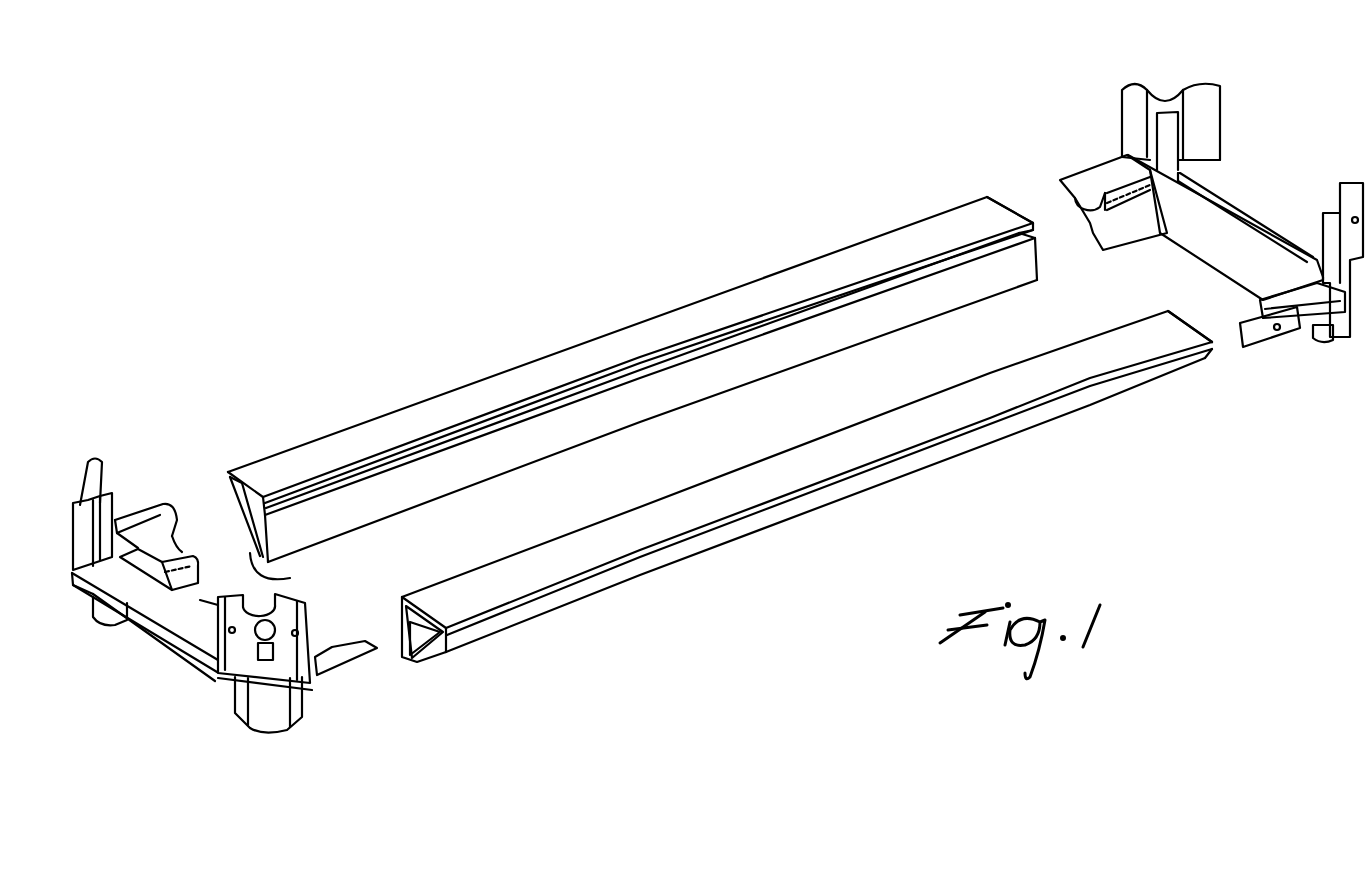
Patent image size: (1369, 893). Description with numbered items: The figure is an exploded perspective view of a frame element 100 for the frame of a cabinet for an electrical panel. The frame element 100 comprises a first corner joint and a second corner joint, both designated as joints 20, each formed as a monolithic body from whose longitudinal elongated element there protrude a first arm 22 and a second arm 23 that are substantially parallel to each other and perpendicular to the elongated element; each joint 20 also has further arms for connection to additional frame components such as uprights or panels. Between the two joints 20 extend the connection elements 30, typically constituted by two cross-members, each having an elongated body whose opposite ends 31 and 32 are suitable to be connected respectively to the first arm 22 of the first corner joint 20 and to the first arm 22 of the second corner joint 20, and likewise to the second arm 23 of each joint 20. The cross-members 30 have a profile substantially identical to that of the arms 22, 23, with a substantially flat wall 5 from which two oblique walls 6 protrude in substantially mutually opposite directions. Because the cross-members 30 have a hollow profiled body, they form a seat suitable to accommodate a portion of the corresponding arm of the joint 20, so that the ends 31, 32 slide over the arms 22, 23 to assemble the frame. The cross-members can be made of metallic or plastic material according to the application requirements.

The frame element 100 is at (797, 180).
The connection elements 30 is at (594, 338).
The end 31 is at (272, 460).
The end 32 is at (986, 196).
The corner joint 20 is at (168, 663).
The first arm 22 is at (138, 517).
The second arm 23 is at (350, 680).
The flat wall 5 is at (247, 525).
The oblique walls 6 is at (227, 487).